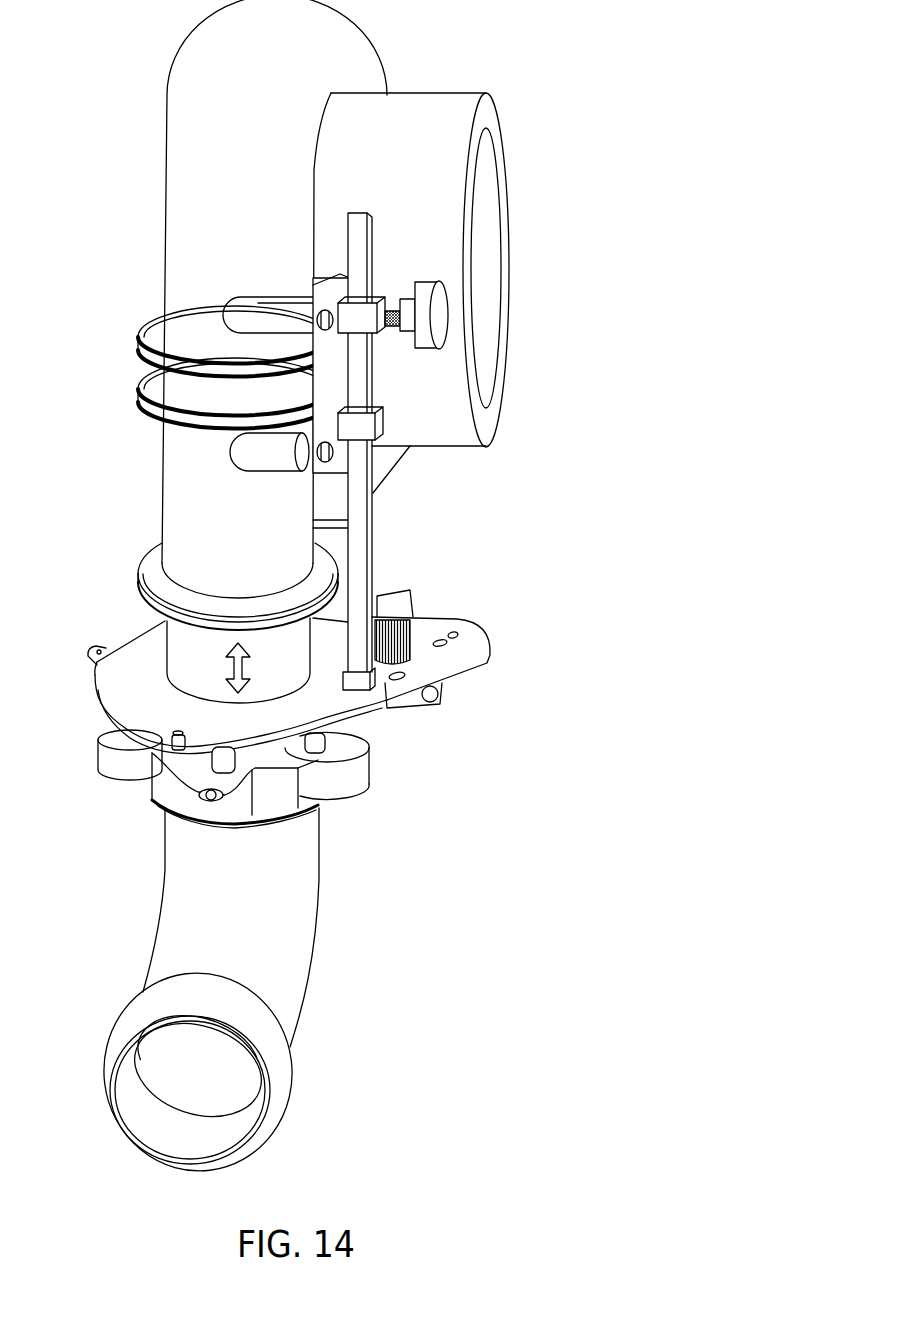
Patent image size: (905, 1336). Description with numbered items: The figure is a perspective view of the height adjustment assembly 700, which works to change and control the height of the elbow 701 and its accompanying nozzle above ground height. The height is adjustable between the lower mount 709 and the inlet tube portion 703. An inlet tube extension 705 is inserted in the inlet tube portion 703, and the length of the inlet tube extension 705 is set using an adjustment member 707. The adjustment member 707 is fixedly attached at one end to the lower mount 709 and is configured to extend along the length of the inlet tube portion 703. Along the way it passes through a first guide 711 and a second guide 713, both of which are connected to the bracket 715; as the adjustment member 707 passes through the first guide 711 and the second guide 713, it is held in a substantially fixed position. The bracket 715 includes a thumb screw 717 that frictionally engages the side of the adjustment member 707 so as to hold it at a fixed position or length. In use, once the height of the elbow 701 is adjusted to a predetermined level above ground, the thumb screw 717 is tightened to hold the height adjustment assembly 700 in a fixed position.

The height adjustment assembly 700 is at (319, 591).
The elbow 701 is at (290, 980).
The inlet tube portion 703 is at (177, 488).
The inlet tube extension 705 is at (287, 672).
The adjustment member 707 is at (373, 553).
The lower mount 709 is at (280, 715).
The first guide 711 is at (385, 428).
The second guide 713 is at (358, 315).
The bracket 715 is at (327, 353).
The thumb screw 717 is at (440, 313).